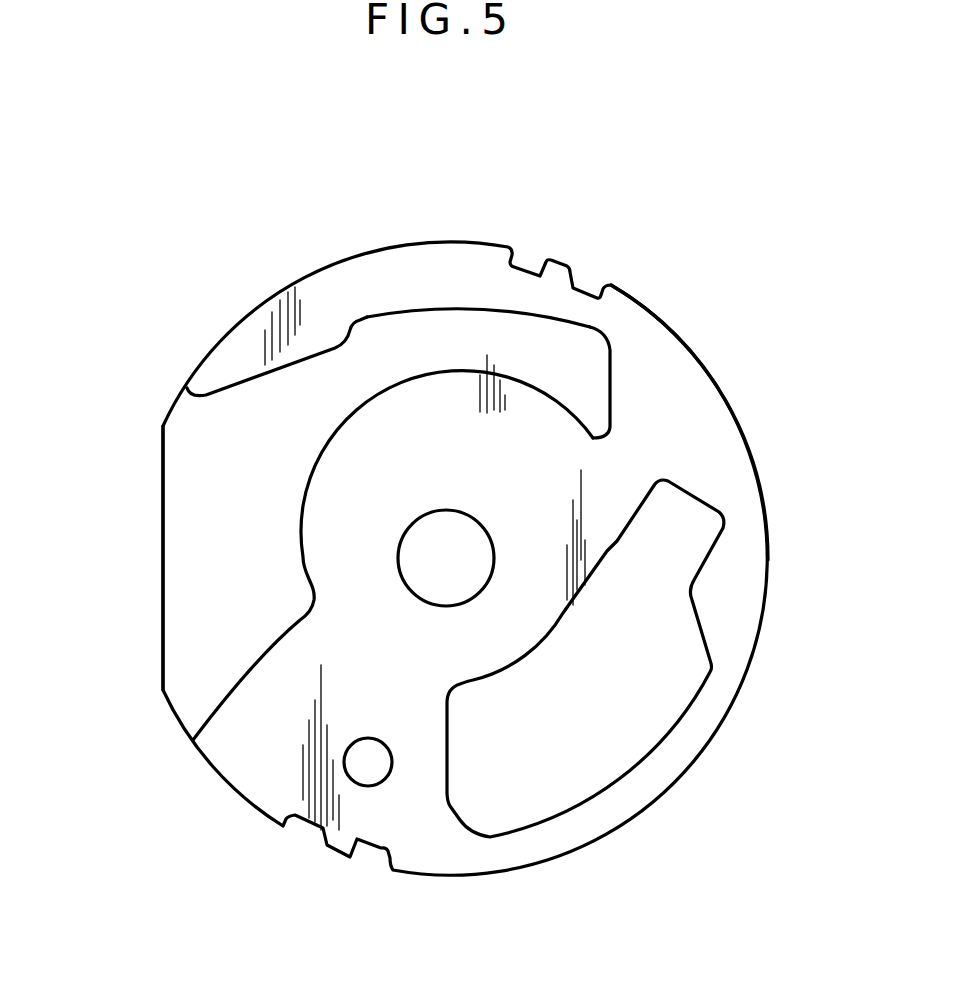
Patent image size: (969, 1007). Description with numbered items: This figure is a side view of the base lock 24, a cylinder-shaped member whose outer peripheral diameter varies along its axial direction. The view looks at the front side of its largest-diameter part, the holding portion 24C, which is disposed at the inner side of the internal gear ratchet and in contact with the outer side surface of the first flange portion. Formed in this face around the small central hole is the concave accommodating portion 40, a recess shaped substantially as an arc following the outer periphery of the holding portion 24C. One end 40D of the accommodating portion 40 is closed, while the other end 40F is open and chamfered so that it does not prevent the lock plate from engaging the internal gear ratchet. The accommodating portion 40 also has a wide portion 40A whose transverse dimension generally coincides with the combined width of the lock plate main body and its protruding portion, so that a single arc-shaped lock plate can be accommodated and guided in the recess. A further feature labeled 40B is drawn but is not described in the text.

The base lock 24 is at (696, 291).
The holding portion 24C is at (723, 432).
The accommodating portion 40 is at (190, 475).
The wide portion 40A is at (470, 312).
The cutout edge 40B is at (362, 318).
The one end 40D is at (612, 364).
The other end 40F is at (163, 565).